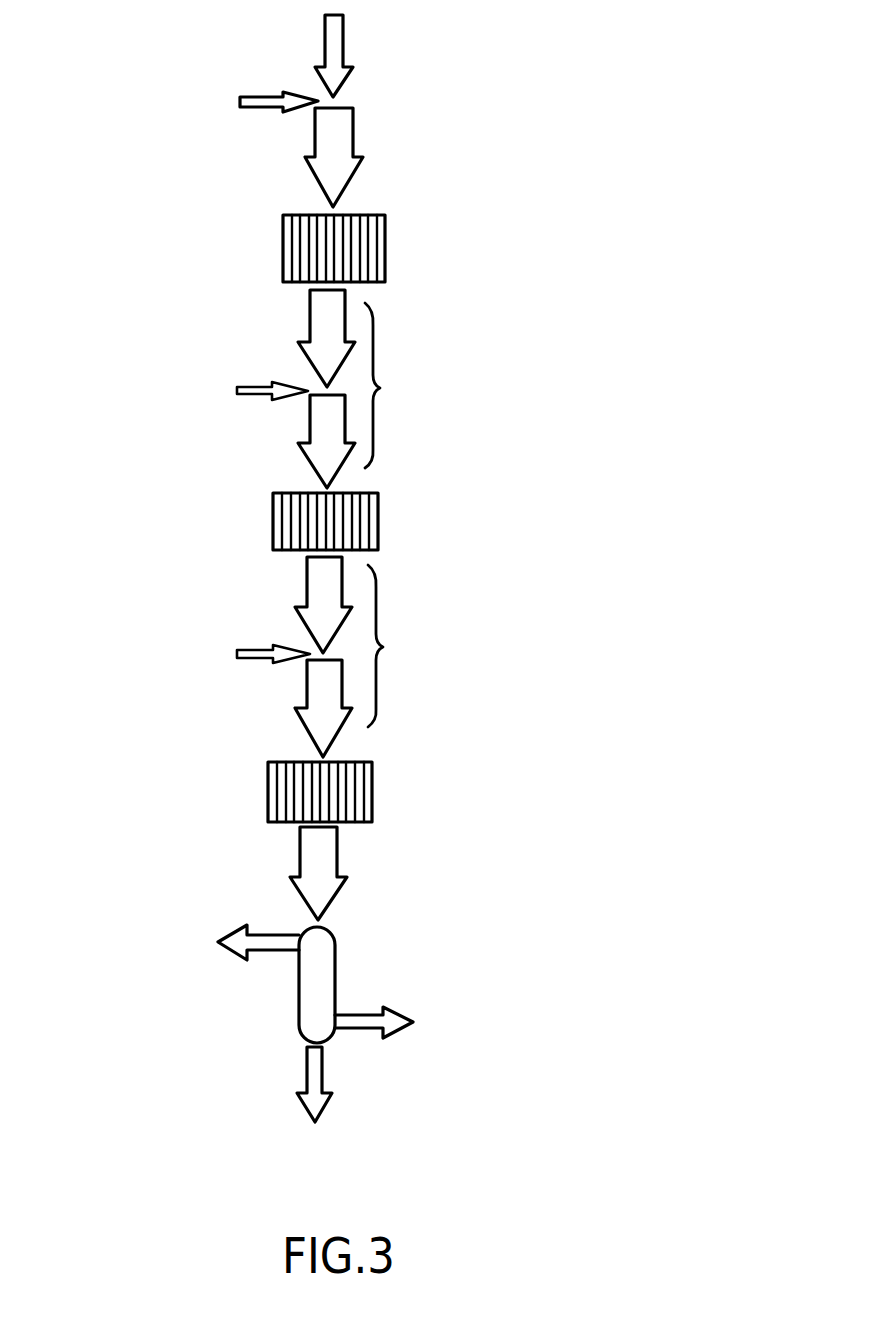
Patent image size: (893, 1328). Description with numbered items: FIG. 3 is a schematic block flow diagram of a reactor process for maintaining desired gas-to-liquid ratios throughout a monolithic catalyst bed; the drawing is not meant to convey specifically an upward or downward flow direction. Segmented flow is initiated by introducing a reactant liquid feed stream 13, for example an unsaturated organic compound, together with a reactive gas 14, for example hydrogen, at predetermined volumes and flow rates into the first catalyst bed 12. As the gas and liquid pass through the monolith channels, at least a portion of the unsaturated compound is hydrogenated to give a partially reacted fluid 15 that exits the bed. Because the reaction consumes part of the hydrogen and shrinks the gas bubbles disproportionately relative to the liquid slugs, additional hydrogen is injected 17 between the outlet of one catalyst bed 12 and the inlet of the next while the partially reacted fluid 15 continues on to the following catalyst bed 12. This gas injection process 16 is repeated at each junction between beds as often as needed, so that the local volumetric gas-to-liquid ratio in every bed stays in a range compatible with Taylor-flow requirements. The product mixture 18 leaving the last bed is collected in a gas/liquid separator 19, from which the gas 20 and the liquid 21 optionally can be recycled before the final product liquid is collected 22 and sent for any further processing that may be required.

The catalyst bed 12 is at (283, 248).
The reactant liquid feed stream 13 is at (343, 43).
The reactive gas 14 is at (268, 97).
The partially reacted fluid 15 is at (353, 143).
The gas injection process 16 is at (392, 515).
The additional hydrogen injection 17 is at (255, 383).
The product mixture 18 is at (337, 855).
The gas/liquid separator 19 is at (299, 998).
The gas 20 is at (243, 927).
The liquid 21 is at (388, 1007).
The final product liquid 22 is at (322, 1073).